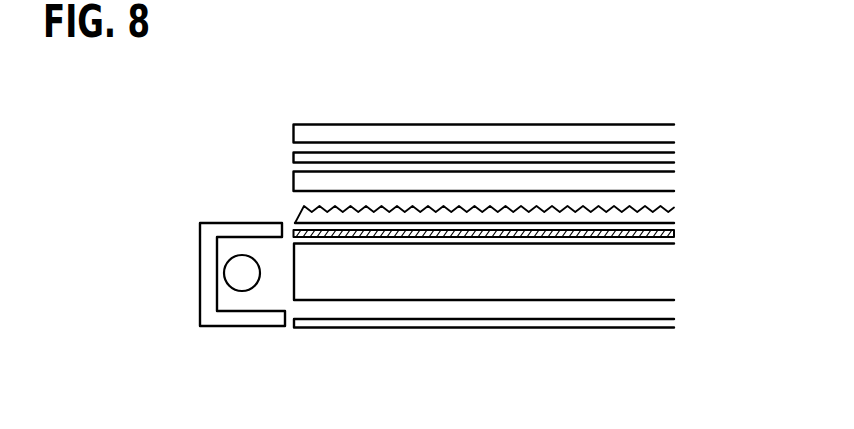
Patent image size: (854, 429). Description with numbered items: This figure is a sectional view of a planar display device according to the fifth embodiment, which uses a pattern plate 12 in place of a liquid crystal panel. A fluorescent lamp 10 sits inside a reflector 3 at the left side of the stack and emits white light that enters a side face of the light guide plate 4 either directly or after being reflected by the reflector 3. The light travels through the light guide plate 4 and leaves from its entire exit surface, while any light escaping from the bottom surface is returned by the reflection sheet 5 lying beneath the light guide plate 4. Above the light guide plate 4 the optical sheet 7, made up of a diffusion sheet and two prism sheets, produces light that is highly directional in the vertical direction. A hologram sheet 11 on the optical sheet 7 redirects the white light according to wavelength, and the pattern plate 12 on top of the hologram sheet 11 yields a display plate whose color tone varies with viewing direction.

The reflector 3 is at (239, 224).
The fluorescent lamp 10 is at (247, 285).
The light guide plate 4 is at (668, 271).
The reflection sheet 5 is at (672, 320).
The optical sheet 7 is at (683, 168).
The hologram sheet 11 is at (675, 155).
The pattern plate 12 is at (668, 124).